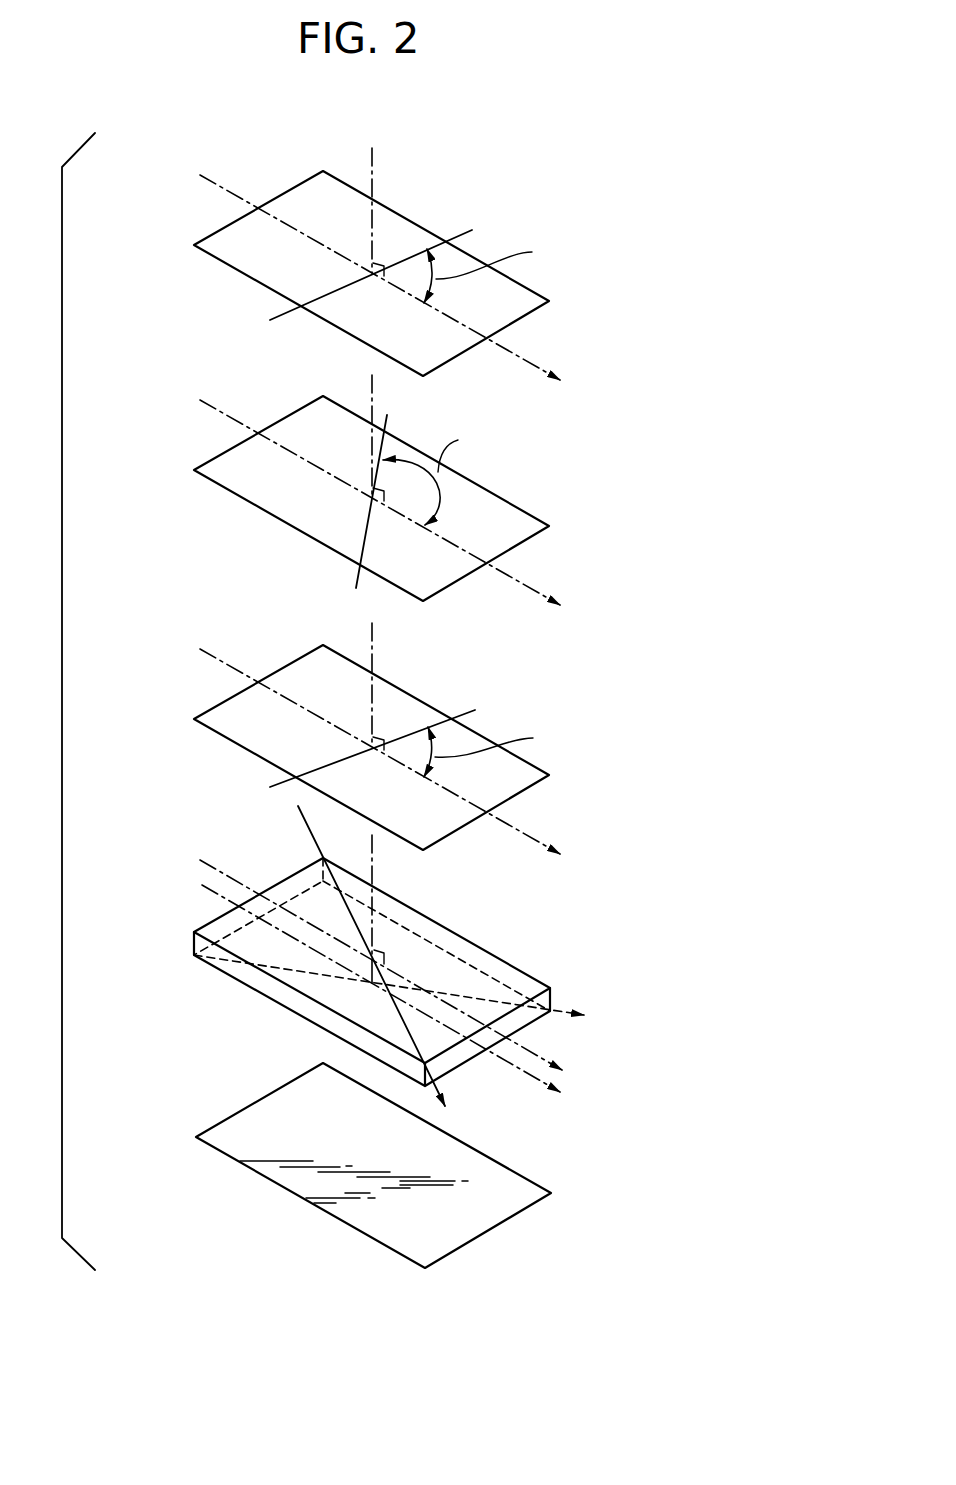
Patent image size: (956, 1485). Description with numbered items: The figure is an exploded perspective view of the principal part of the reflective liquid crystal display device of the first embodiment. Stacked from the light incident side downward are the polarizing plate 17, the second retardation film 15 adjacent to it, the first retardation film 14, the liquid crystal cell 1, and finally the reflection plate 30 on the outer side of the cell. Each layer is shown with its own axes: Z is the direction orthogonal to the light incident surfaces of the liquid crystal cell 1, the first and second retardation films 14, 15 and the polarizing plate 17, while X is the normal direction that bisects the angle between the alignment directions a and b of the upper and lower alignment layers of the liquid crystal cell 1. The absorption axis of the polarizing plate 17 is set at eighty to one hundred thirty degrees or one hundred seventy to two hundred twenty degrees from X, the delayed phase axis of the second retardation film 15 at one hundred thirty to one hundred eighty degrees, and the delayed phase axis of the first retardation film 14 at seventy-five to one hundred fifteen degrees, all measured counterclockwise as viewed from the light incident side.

The polarizing plate 17 is at (229, 225).
The second retardation film 15 is at (229, 450).
The first retardation film 14 is at (229, 698).
The liquid crystal cell 1 is at (229, 912).
The reflection plate 30 is at (229, 1118).